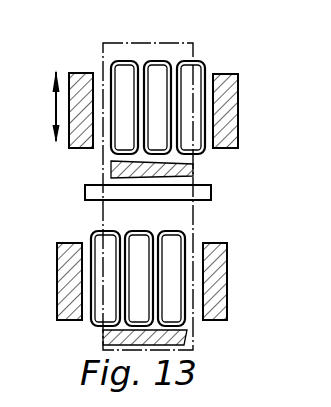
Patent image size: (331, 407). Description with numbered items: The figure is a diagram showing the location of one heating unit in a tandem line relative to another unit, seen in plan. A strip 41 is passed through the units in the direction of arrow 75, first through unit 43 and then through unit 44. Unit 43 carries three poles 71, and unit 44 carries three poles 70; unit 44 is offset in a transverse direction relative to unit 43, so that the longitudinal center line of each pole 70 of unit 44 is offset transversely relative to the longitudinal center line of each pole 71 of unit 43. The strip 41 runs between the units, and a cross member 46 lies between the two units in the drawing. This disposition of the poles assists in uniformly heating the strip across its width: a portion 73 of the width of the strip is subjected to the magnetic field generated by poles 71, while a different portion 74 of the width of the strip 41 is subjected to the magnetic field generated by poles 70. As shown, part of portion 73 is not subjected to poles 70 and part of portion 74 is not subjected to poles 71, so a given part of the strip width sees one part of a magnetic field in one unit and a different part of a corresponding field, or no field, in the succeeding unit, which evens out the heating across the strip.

The strip 41 is at (137, 41).
The poles 71 is at (157, 63).
The arrow 75 is at (54, 104).
The heating unit 43 is at (238, 105).
The portion of the width of the strip 73 is at (193, 164).
The base plate 46 is at (212, 192).
The poles 70 is at (128, 232).
The heating unit 44 is at (225, 281).
The portion of the width of the strip 74 is at (103, 336).